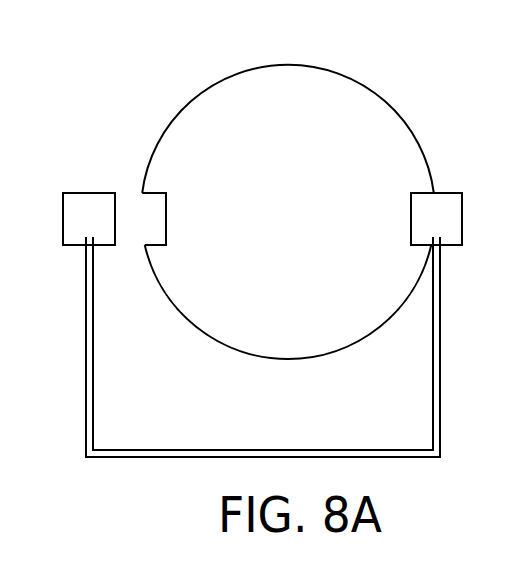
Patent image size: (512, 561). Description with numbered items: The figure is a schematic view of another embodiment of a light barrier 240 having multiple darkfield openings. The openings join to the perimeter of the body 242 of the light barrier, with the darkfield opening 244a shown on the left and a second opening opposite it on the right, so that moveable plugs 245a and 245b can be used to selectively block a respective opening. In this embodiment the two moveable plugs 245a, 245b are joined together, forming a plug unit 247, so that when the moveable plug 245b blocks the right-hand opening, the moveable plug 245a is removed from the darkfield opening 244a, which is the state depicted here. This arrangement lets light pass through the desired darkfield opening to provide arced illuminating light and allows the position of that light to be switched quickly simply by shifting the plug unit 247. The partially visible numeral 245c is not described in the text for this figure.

The light barrier 240 is at (363, 65).
The body 242 is at (275, 82).
The darkfield opening 244a is at (153, 210).
The moveable plug 245a is at (82, 210).
The moveable plug 245b is at (458, 215).
The electrode pad 245c is at (511, 243).
The plug unit 247 is at (291, 450).